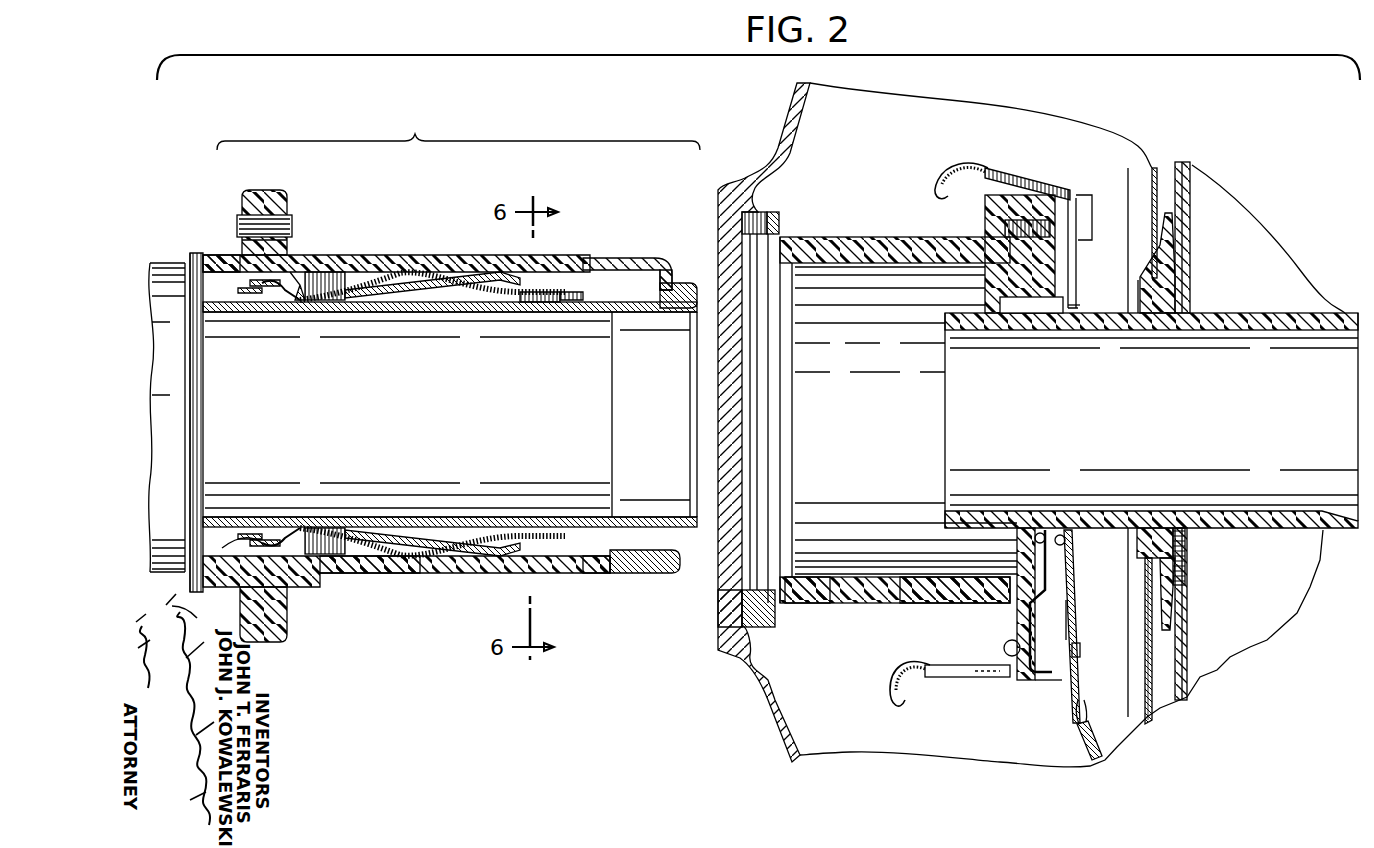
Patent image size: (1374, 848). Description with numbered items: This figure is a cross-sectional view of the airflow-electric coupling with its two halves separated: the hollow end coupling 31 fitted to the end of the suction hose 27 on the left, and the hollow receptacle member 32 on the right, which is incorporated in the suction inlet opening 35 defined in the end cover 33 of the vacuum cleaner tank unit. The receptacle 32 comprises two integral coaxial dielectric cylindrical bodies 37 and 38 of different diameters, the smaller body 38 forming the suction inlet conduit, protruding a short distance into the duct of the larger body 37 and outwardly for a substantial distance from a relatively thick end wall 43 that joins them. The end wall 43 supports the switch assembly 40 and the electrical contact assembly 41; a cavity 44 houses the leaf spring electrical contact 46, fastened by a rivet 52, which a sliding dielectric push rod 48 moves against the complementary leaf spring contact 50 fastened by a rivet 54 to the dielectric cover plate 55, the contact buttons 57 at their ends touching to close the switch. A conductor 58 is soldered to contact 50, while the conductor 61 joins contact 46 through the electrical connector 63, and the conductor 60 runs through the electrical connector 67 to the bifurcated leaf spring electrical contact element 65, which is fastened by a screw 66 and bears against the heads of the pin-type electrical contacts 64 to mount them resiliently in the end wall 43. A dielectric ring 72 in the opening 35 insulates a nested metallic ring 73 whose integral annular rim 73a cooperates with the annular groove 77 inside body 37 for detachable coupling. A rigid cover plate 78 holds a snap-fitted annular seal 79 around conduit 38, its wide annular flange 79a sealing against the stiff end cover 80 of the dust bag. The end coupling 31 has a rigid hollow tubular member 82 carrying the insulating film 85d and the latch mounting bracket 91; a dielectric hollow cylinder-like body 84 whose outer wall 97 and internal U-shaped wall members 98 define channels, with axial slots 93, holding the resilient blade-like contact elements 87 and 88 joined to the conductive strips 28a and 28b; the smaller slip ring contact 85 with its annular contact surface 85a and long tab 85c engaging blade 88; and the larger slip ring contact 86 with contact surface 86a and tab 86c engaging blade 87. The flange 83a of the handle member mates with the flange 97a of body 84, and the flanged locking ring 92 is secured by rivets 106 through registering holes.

The suction hose 27 is at (171, 247).
The conductive strip 28a is at (222, 530).
The conductive strip 28b is at (282, 300).
The end coupling 31 is at (418, 131).
The hollow receptacle member 32 is at (885, 190).
The end cover 33 is at (780, 140).
The suction inlet opening 35 is at (702, 569).
The hollow cylindrical body 37 is at (856, 248).
The hollow cylindrical body 38 is at (1298, 313).
The switch assembly 40 is at (1085, 602).
The electrical contact assembly 41 is at (1088, 286).
The end wall 43 is at (1046, 266).
The cavity 44 is at (1061, 598).
The leaf spring electrical contact 46 is at (1016, 605).
The push rod 48 is at (950, 602).
The leaf spring contact 50 is at (1066, 560).
The rivet 52 is at (1004, 648).
The rivet 54 is at (1082, 650).
The cover plate 55 is at (1070, 626).
The contact button 57 is at (1038, 532).
The conductor 58 is at (1082, 744).
The conductor 60 is at (946, 172).
The conductor 61 is at (890, 692).
The electrical connector 63 is at (962, 678).
The pin-type electrical contact 64 is at (1012, 314).
The bifurcated leaf spring electrical contact element 65 is at (1078, 272).
The screw 66 is at (1080, 213).
The electrical connector 67 is at (1010, 178).
The dielectric ring 72 is at (740, 222).
The metallic ring 73 is at (775, 608).
The annular rim 73a is at (720, 600).
The annular groove 77 is at (798, 588).
The rigid cover plate 78 is at (1156, 180).
The annular seal 79 is at (1176, 548).
The annular flange 79a is at (1172, 596).
The end cover of dust bag 80 is at (1188, 200).
The rigid hollow tubular member 82 is at (370, 316).
The flange 83a is at (267, 200).
The hollow cylinder-like body 84 is at (361, 234).
The slip ring contact 85 is at (650, 312).
The annular contact surface 85a is at (690, 284).
The axially projecting tab 85c is at (522, 304).
The insulating film 85d is at (250, 300).
The slip ring contact 86 is at (632, 258).
The annular contact surface 86a is at (672, 272).
The axially projecting tab 86c is at (572, 574).
The resilient blade-like contact element 87 is at (392, 562).
The resilient blade-like contact element 88 is at (374, 268).
The mounting bracket 91 is at (614, 570).
The flanged locking ring 92 is at (222, 257).
The axial slot 93 is at (562, 290).
The outer wall 97 is at (498, 270).
The flange 97a is at (290, 204).
The U-shaped wall member 98 is at (412, 272).
The rivet 106 is at (240, 224).